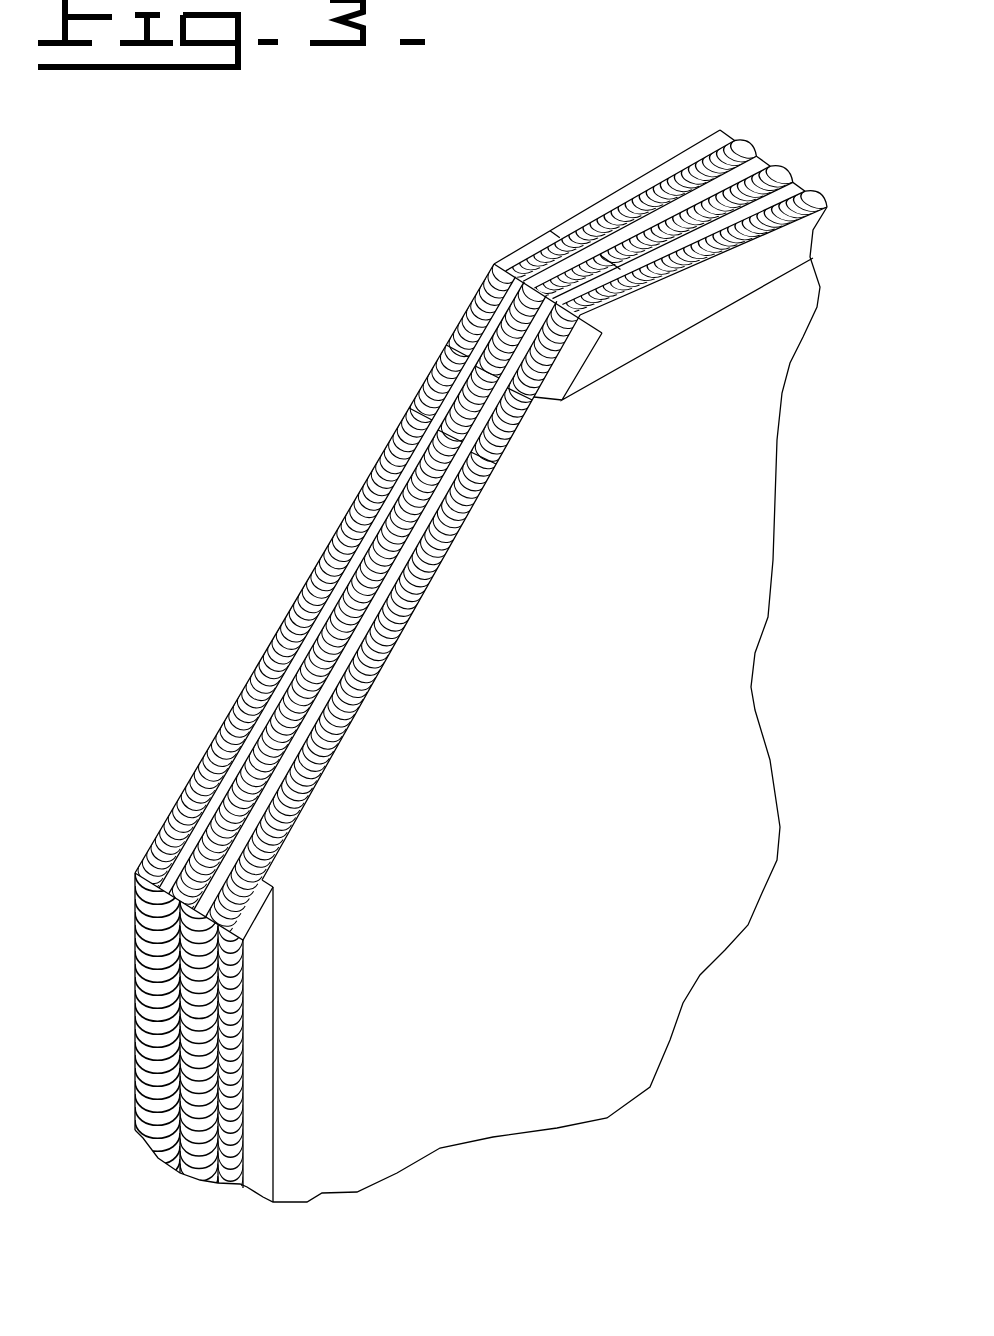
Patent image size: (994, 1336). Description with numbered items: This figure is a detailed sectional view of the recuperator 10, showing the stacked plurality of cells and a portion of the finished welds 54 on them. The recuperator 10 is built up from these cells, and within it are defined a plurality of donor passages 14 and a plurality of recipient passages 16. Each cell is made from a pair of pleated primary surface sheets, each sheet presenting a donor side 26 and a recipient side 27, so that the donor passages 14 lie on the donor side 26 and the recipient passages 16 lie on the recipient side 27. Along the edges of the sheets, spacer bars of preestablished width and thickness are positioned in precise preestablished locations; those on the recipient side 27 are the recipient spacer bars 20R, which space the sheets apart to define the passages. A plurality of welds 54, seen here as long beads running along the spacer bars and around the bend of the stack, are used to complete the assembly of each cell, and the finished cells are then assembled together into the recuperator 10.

The recuperator 10 is at (479, 732).
The donor passages 14 is at (624, 242).
The recipient passages 16 is at (311, 635).
The recipient spacer bars 20R is at (516, 250).
The donor side 26 is at (676, 260).
The recipient side 27 is at (470, 452).
The welds 54 is at (270, 865).